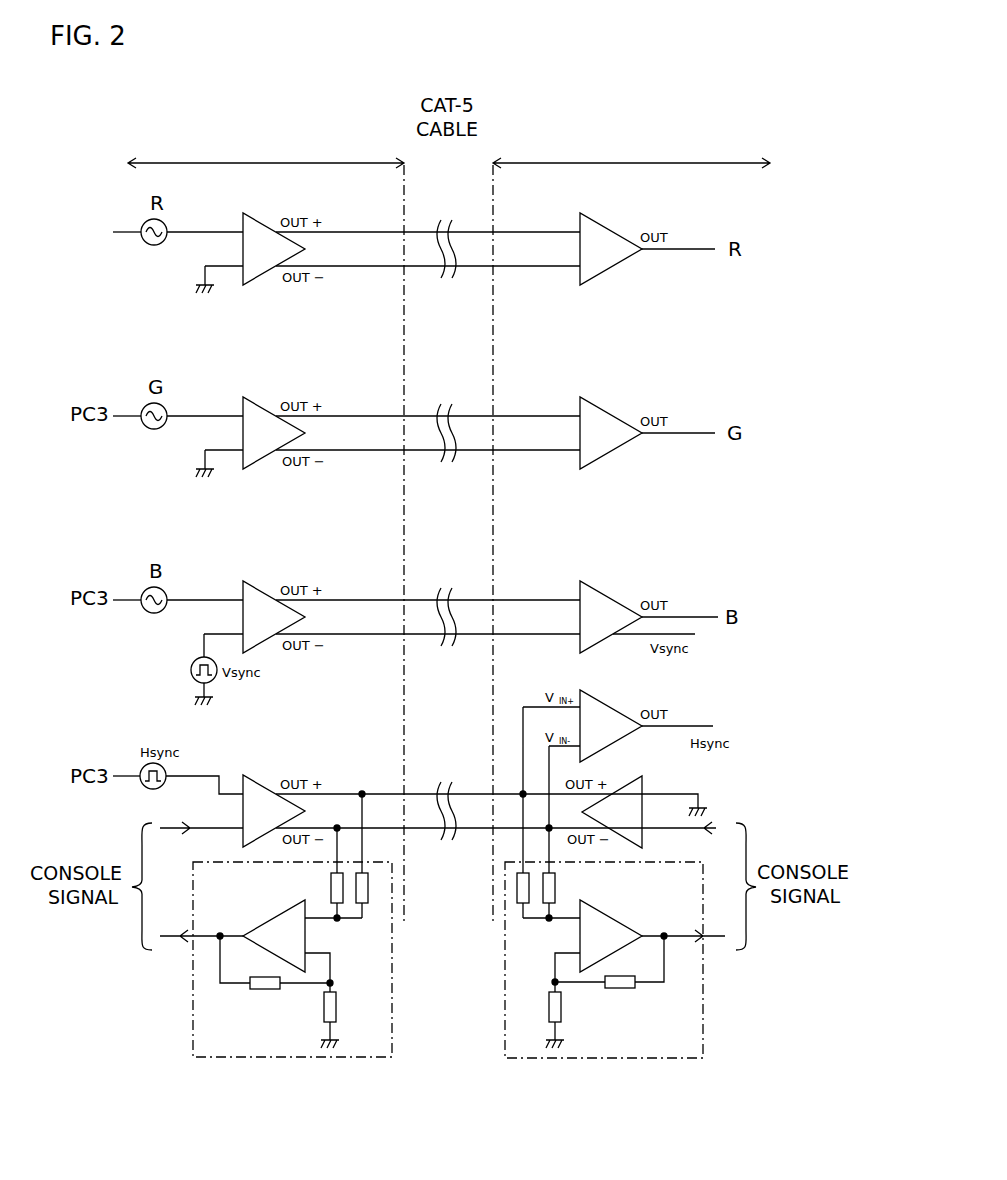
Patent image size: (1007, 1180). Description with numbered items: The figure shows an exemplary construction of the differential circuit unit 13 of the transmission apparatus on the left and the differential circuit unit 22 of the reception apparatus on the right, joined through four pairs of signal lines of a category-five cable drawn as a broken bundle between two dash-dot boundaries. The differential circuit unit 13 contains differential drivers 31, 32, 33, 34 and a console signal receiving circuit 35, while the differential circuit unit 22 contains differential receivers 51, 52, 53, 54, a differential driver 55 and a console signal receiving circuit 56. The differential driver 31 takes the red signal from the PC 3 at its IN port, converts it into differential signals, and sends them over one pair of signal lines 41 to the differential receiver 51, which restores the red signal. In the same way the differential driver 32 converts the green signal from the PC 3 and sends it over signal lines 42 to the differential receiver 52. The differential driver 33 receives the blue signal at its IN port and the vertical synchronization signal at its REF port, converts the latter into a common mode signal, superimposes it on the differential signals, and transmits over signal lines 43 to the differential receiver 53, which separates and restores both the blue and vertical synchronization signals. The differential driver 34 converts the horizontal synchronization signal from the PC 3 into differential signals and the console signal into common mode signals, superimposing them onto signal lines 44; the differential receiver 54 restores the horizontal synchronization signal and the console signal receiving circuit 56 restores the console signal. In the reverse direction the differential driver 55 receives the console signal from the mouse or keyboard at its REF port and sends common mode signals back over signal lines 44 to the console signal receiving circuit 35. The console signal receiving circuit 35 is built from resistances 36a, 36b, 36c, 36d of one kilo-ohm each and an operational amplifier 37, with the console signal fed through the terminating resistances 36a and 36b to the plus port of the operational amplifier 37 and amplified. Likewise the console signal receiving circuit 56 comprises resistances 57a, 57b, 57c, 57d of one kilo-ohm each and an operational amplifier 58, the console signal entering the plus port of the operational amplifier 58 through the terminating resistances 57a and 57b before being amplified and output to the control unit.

The PC 3 is at (105, 230).
The differential circuit unit 13 is at (266, 124).
The differential circuit unit 22 is at (631, 124).
The differential driver 31 is at (258, 222).
The differential driver 32 is at (258, 406).
The differential driver 33 is at (258, 590).
The differential driver 34 is at (258, 784).
The console signal receiving circuit 35 is at (230, 1058).
The resistance 36a is at (331, 888).
The resistance 36b is at (366, 905).
The resistance 36c is at (265, 990).
The resistance 36d is at (336, 1007).
The operational amplifier 37 is at (268, 922).
The pair of signal lines 41 is at (468, 232).
The pair of signal lines 42 is at (468, 416).
The pair of signal lines 43 is at (468, 600).
The pair of signal lines 44 is at (468, 794).
The differential receiver 51 is at (605, 227).
The differential receiver 52 is at (605, 411).
The differential receiver 53 is at (605, 595).
The differential receiver 54 is at (605, 704).
The differential driver 55 is at (644, 784).
The console signal receiving circuit 56 is at (602, 1058).
The resistance 57a is at (556, 888).
The resistance 57b is at (517, 888).
The resistance 57c is at (620, 990).
The resistance 57d is at (561, 1013).
The operational amplifier 58 is at (622, 923).